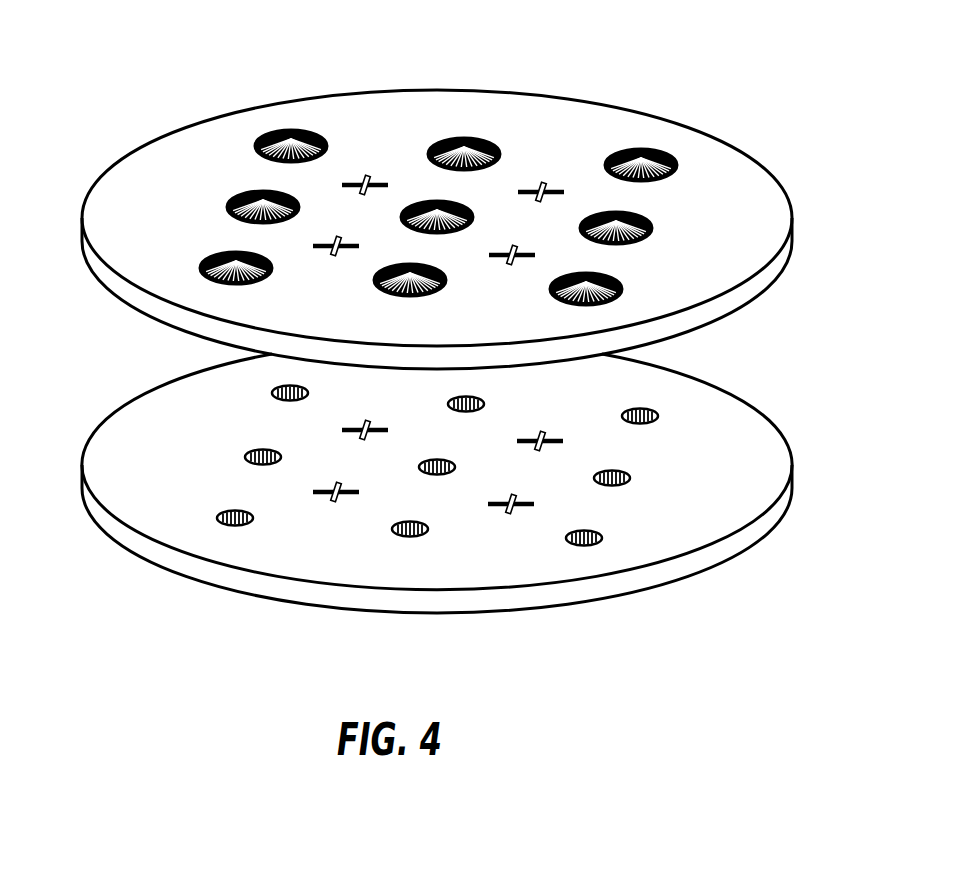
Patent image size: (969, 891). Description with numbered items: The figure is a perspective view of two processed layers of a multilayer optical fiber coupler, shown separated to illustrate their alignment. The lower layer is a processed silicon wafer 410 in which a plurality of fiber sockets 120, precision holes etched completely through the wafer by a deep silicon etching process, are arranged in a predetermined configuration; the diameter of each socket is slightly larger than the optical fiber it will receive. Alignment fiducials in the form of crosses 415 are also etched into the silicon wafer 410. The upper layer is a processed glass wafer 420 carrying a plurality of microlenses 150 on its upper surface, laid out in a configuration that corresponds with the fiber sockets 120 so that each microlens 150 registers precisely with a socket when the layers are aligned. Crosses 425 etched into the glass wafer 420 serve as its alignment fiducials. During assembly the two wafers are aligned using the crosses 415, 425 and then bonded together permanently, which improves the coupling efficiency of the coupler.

The processed glass wafer 420 is at (142, 175).
The processed silicon wafer 410 is at (135, 430).
The microlenses 150 is at (282, 133).
The crosses 425 is at (523, 253).
The crosses 415 is at (532, 497).
The fiber sockets 120 is at (395, 533).